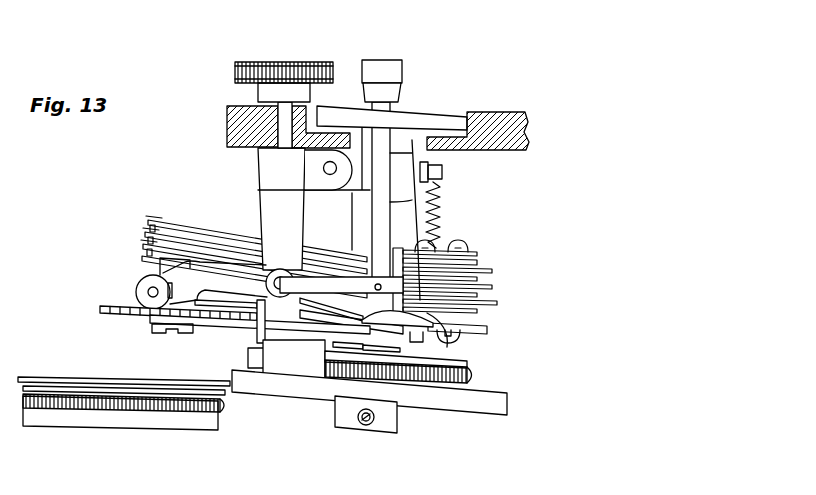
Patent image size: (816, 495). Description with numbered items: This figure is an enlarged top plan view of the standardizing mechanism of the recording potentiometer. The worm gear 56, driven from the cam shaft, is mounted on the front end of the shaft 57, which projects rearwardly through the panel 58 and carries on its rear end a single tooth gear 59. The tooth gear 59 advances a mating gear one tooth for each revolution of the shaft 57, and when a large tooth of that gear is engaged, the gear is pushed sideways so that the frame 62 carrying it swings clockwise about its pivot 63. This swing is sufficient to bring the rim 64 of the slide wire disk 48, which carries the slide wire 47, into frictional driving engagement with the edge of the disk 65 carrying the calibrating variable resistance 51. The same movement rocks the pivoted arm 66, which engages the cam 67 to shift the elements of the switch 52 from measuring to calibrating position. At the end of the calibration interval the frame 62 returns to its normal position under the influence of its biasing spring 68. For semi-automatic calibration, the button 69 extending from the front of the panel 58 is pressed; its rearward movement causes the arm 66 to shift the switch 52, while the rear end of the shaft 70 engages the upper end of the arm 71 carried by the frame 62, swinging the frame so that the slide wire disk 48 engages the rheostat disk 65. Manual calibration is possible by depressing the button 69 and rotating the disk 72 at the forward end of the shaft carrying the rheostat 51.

The slide wire 47 is at (134, 413).
The slide wire disk 48 is at (59, 391).
The variable resistance 51 is at (473, 380).
The switch 52 is at (143, 232).
The worm gear 56 is at (270, 62).
The shaft 57 is at (277, 122).
The panel 58 is at (500, 112).
The tooth gear 59 is at (253, 338).
The frame 62 is at (408, 207).
The pivot 63 is at (330, 175).
The rim 64 is at (228, 393).
The disk 65 is at (433, 402).
The pivoted arm 66 is at (233, 275).
The cam 67 is at (140, 276).
The biasing spring 68 is at (434, 220).
The button 69 is at (390, 67).
The shaft 70 is at (380, 128).
The arm 71 is at (430, 316).
The disk 72 is at (437, 120).